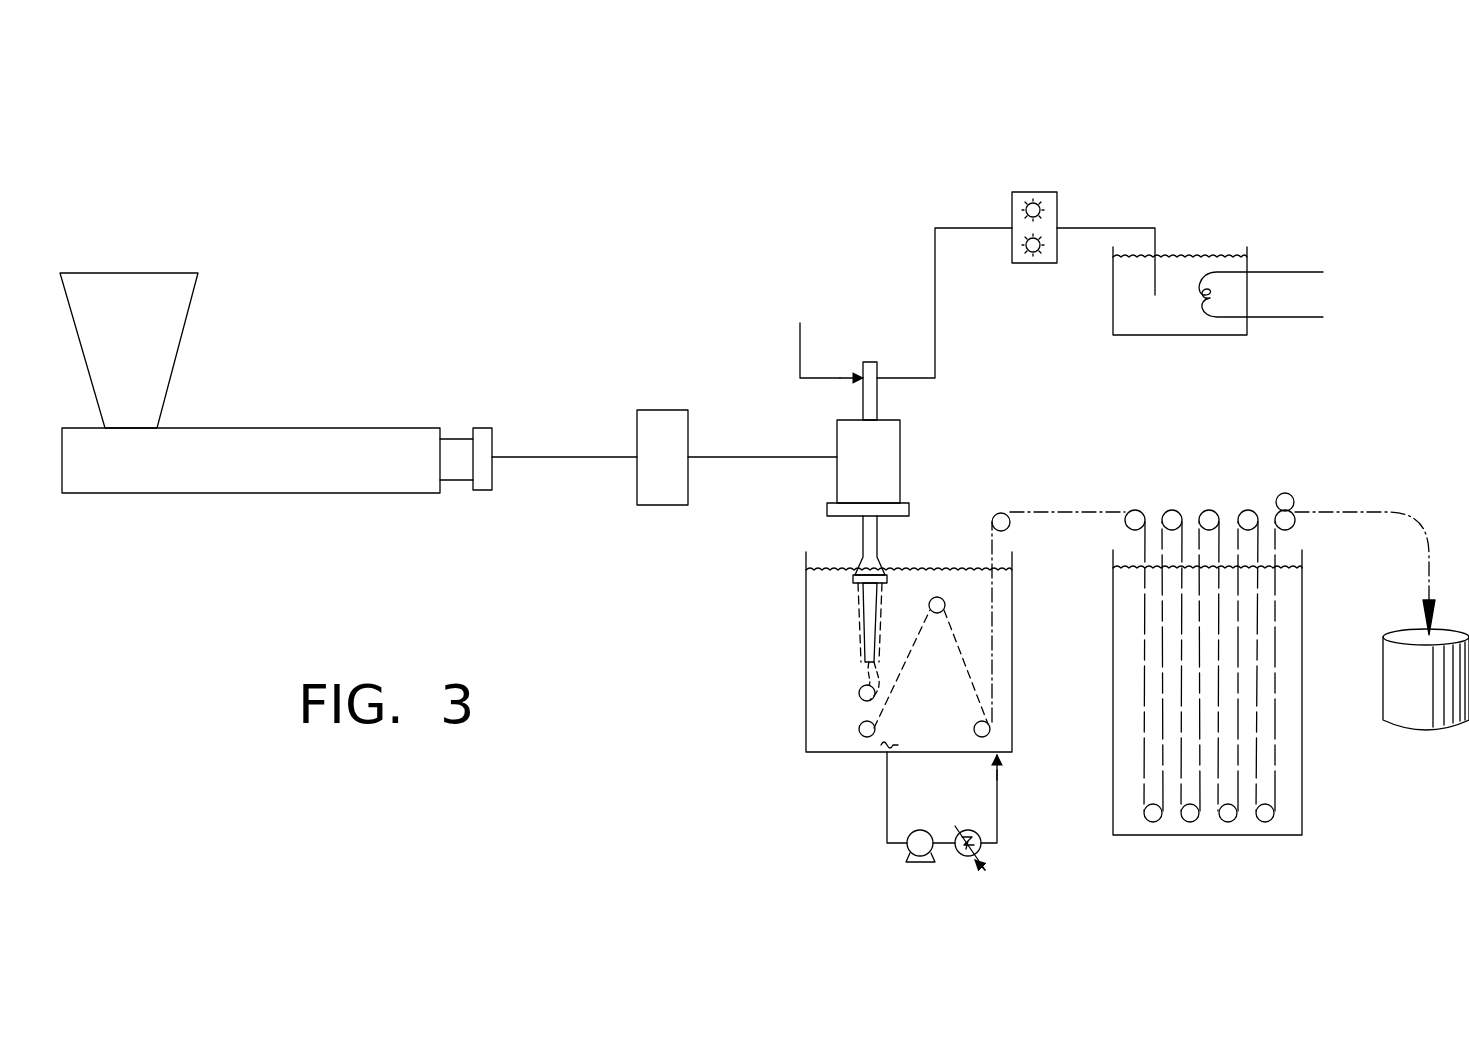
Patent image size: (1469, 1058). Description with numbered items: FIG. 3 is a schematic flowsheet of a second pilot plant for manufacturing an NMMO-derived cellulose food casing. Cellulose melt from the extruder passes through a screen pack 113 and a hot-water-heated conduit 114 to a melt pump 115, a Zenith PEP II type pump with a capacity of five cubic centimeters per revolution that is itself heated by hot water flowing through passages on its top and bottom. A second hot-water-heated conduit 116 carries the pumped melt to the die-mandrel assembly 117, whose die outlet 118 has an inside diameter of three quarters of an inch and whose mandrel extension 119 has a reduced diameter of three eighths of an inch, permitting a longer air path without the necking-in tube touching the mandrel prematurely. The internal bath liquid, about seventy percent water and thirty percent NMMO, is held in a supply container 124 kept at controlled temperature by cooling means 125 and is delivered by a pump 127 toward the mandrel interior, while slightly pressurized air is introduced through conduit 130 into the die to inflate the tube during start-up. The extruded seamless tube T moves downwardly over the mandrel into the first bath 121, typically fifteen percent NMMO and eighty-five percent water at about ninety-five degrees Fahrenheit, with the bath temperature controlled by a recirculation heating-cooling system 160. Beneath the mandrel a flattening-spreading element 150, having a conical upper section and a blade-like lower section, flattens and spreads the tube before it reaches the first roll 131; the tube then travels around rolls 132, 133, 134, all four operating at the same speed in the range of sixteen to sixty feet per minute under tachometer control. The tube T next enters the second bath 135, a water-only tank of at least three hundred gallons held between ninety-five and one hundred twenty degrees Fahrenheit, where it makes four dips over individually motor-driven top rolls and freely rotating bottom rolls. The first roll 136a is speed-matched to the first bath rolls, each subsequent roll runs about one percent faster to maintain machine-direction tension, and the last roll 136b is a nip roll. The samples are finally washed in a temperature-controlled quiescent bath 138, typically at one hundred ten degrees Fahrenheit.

The screen pack 113 is at (484, 428).
The conduit 114 is at (598, 457).
The melt pump 115 is at (668, 410).
The conduit 116 is at (787, 457).
The die-mandrel assembly 117 is at (895, 460).
The die outlet 118 is at (862, 516).
The mandrel extension 119 is at (872, 545).
The first bath 121 is at (962, 583).
The supply container 124 is at (1125, 316).
The cooling means 125 is at (1277, 272).
The pump 127 is at (1022, 192).
The air conduit 130 is at (800, 352).
The first roll 131 is at (859, 694).
The first bath roll 132 is at (858, 736).
The first bath roll 133 is at (937, 614).
The first bath roll 134 is at (982, 738).
The second bath 135 is at (1285, 762).
The first roll 136a is at (1125, 521).
The nip roll 136b is at (1287, 492).
The quiescent bath 138 is at (1398, 690).
The flattening-spreading element 150 is at (870, 647).
The recirculation heating-cooling system 160 is at (850, 805).
The extruded seamless tube T is at (1086, 511).